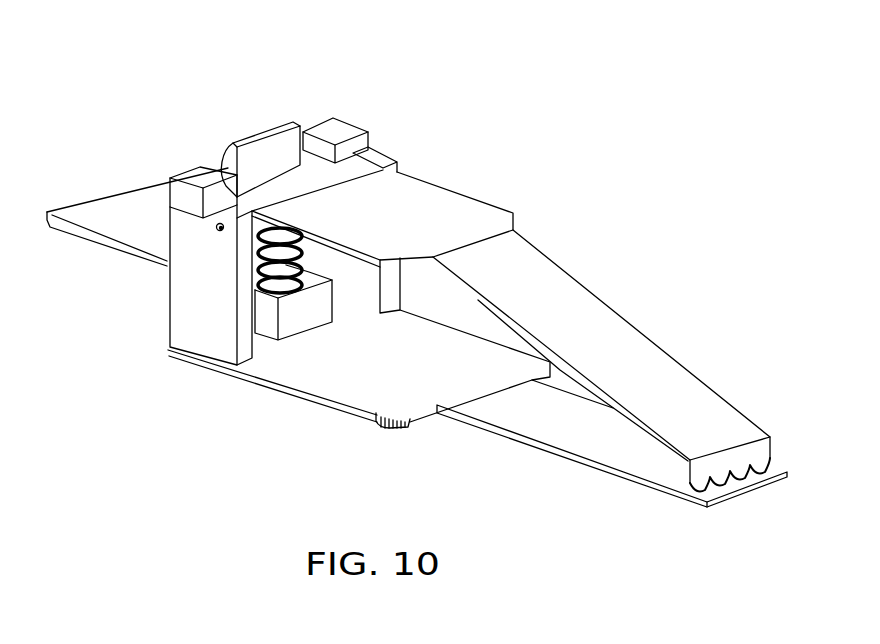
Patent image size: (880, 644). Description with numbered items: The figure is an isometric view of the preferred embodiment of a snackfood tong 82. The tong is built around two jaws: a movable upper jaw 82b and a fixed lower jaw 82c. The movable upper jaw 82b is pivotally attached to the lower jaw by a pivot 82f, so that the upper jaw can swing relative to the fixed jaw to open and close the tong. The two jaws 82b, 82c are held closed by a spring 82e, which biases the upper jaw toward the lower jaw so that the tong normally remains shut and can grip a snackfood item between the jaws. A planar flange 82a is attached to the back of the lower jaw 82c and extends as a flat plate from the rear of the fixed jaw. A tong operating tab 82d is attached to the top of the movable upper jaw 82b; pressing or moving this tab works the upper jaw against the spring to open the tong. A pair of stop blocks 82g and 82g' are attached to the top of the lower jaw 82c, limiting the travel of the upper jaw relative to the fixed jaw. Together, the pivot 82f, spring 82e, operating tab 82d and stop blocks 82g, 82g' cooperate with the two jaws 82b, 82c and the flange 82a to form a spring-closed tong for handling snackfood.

The snackfood tong 82 is at (422, 193).
The planar flange 82a is at (117, 220).
The movable upper jaw 82b is at (577, 308).
The fixed lower jaw 82c is at (557, 427).
The tong operating tab 82d is at (250, 157).
The spring 82e is at (278, 276).
The pivot 82f is at (217, 231).
The stop block 82g is at (142, 225).
The stop block 82g' is at (342, 91).